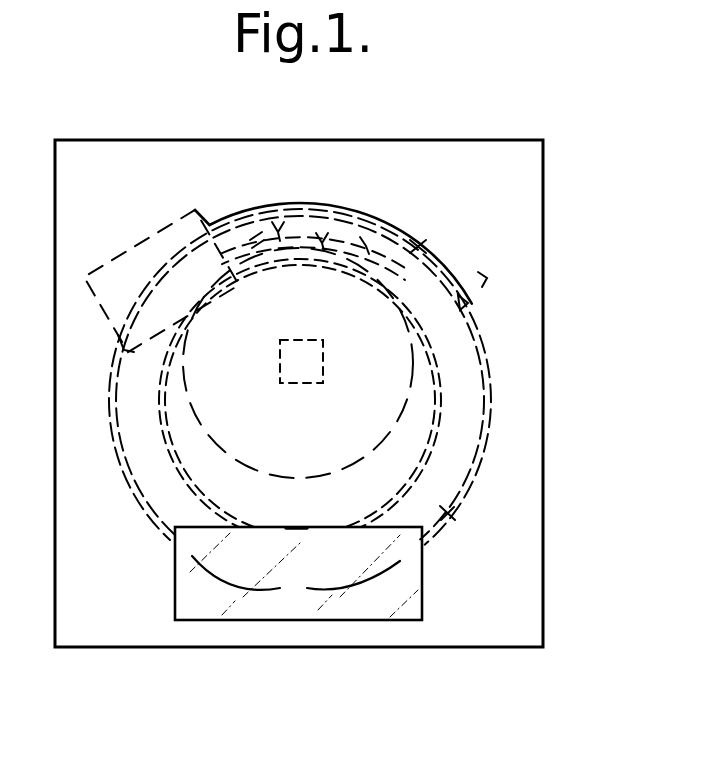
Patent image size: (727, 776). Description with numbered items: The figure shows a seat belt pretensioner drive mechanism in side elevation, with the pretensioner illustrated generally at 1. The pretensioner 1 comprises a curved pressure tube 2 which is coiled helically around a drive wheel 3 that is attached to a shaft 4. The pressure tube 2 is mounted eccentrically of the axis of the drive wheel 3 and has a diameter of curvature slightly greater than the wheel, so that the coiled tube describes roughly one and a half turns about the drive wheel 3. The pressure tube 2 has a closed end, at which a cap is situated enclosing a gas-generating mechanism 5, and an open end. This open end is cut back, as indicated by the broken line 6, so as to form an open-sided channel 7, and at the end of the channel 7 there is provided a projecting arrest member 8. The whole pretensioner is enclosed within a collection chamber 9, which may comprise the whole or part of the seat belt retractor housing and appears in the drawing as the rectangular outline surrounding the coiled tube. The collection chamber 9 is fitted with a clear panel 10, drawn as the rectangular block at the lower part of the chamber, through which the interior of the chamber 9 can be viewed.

The pretensioner 1 is at (590, 217).
The curved pressure tube 2 is at (458, 530).
The drive wheel 3 is at (284, 470).
The shaft 4 is at (312, 339).
The gas-generating mechanism 5 is at (157, 275).
The broken line 6 is at (420, 237).
The open-sided channel 7 is at (384, 213).
The projecting arrest member 8 is at (470, 304).
The collection chamber 9 is at (543, 524).
The clear panel 10 is at (364, 602).